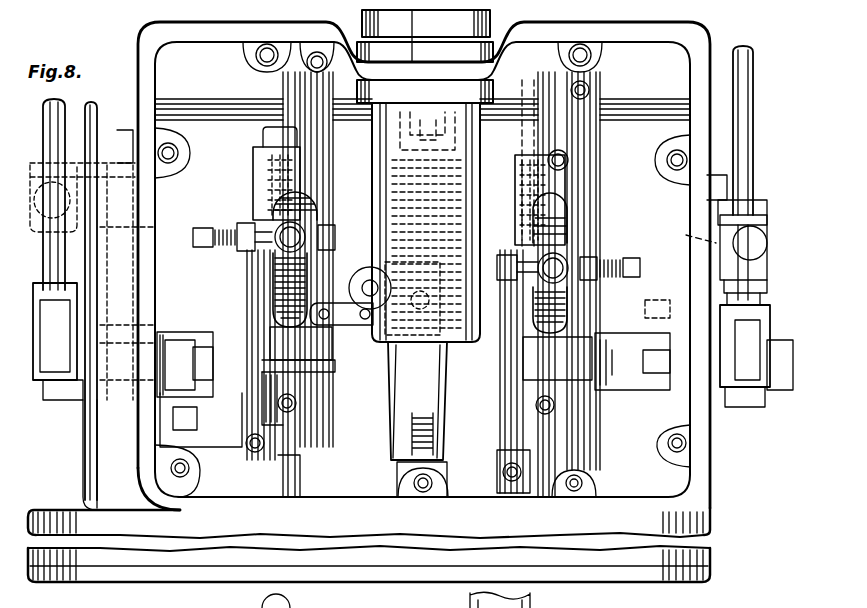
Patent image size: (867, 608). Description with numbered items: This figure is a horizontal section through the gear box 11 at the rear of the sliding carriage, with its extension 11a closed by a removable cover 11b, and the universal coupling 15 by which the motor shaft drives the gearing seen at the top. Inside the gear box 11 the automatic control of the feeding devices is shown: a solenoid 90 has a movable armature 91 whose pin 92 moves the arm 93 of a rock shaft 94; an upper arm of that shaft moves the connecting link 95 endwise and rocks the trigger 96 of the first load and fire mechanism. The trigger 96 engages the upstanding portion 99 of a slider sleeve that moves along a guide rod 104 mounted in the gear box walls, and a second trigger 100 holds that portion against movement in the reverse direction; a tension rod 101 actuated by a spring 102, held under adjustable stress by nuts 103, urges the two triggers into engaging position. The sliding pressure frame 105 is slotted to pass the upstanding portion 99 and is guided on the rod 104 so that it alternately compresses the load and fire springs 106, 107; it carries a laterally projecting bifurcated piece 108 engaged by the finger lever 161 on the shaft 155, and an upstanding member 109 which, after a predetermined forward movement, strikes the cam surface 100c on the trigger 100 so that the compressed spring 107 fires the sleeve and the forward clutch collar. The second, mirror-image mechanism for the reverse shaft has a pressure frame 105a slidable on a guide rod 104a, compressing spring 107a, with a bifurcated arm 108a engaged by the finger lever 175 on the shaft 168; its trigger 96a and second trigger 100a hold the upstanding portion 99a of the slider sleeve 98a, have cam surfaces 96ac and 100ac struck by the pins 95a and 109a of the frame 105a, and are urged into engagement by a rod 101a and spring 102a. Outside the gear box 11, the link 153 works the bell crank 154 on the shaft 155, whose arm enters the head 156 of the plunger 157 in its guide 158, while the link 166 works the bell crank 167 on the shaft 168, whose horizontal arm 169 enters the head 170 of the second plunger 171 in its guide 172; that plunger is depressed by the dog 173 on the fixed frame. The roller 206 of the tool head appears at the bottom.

The gear box 11 is at (695, 442).
The extension of the gear box 11a is at (683, 553).
The removable cover 11b is at (635, 575).
The universal coupling 15 is at (425, 56).
The solenoid 90 is at (480, 222).
The movable armature 91 is at (447, 402).
The pin 92 is at (428, 296).
The arm 93 is at (428, 305).
The rock shaft 94 is at (372, 305).
The connecting link 95 is at (333, 345).
The trigger 96 is at (322, 118).
The upstanding portion 99 is at (276, 200).
The second trigger 100 is at (248, 290).
The tension rod 101 is at (272, 256).
The spring 102 is at (270, 244).
The nuts 103 is at (200, 247).
The guide rod 104 is at (286, 88).
The sliding pressure frame 105 is at (264, 212).
The load and fire spring 106 is at (322, 372).
The load and fire spring 107 is at (262, 167).
The bifurcated piece 108 is at (232, 425).
The upstanding member 109 is at (296, 408).
The shaft 155 is at (213, 360).
The finger lever 161 is at (195, 416).
The cam surface 100c is at (300, 392).
The pin 95a is at (568, 160).
The trigger 96a is at (592, 150).
The cam surface 96ac is at (568, 230).
The slider sleeve 98a is at (568, 300).
The upstanding portion 99a is at (567, 260).
The second trigger 100a is at (505, 362).
The cam surface 100ac is at (528, 366).
The rod 101a is at (640, 268).
The spring 102a is at (600, 258).
The guide rod 104a is at (552, 82).
The pressure frame 105a is at (533, 140).
The spring 107a is at (565, 200).
The bifurcated arm 108a is at (644, 310).
The pin 109a is at (556, 410).
The dog 173 is at (682, 234).
The finger lever 175 is at (643, 362).
The link 153 is at (56, 122).
The bell crank 154 is at (52, 392).
The head 156 is at (70, 230).
The plunger 157 is at (68, 185).
The guide 158 is at (75, 183).
The link 166 is at (740, 96).
The bell crank 167 is at (742, 407).
The shaft 168 is at (788, 392).
The horizontal arm 169 is at (740, 288).
The head 170 is at (762, 268).
The second plunger 171 is at (764, 242).
The guide 172 is at (750, 218).
The roller 206 is at (535, 597).